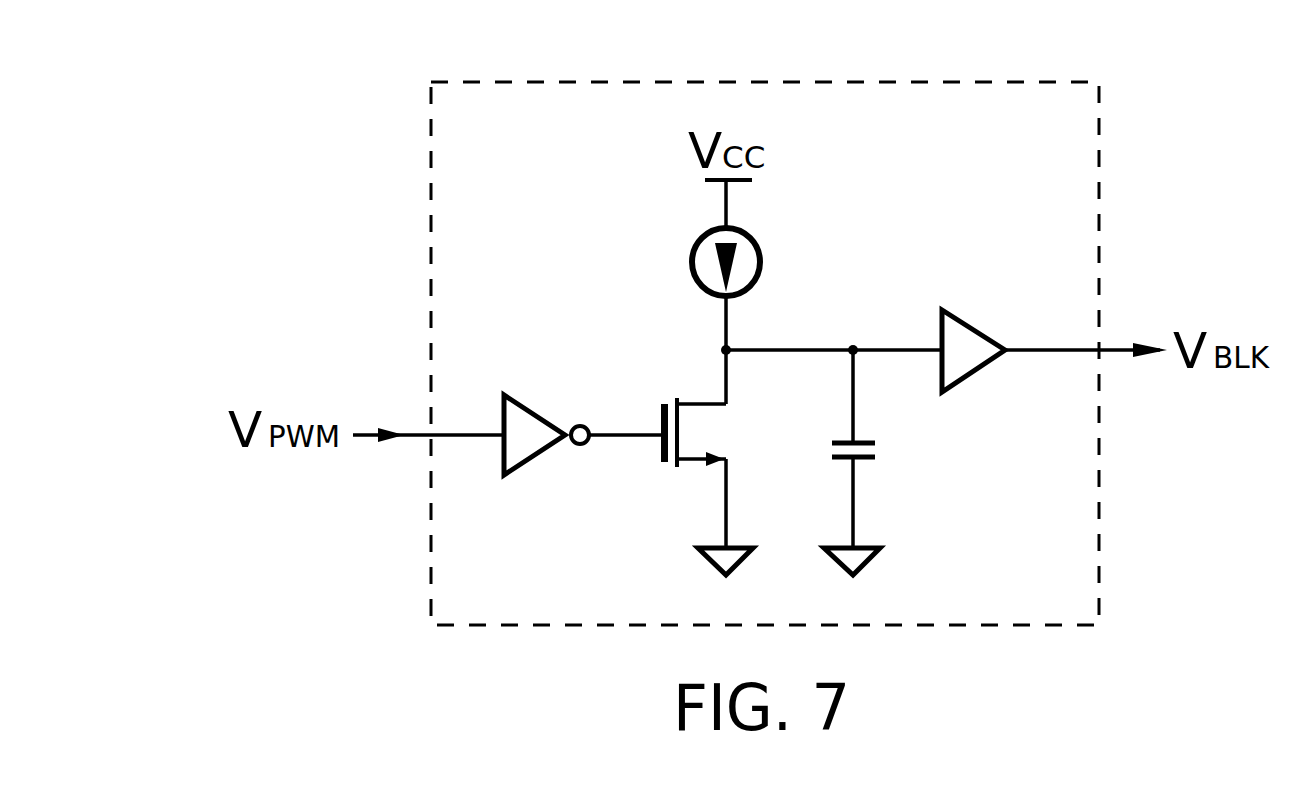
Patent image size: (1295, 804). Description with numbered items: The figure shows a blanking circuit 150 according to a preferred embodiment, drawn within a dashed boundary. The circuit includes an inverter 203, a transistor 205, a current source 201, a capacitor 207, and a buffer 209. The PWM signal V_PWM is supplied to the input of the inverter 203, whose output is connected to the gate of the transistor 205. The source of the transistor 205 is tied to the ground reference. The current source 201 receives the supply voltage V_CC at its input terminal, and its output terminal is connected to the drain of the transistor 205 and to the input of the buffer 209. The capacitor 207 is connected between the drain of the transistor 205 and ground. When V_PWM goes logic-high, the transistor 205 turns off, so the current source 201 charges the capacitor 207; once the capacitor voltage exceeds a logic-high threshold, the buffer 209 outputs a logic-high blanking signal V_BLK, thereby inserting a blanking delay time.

The blanking circuit 150 is at (1099, 150).
The current source 201 is at (768, 256).
The inverter 203 is at (537, 402).
The transistor 205 is at (668, 475).
The capacitor 207 is at (880, 450).
The buffer 209 is at (982, 323).